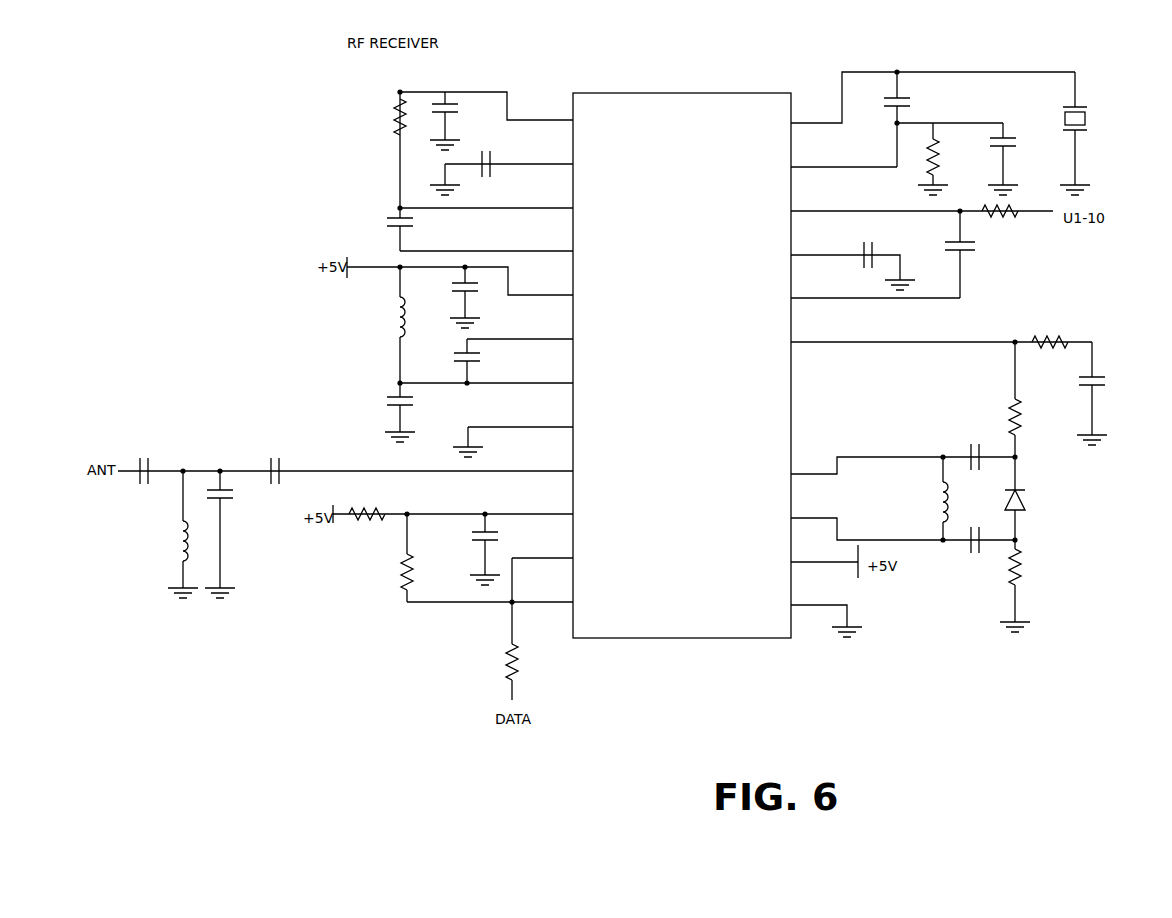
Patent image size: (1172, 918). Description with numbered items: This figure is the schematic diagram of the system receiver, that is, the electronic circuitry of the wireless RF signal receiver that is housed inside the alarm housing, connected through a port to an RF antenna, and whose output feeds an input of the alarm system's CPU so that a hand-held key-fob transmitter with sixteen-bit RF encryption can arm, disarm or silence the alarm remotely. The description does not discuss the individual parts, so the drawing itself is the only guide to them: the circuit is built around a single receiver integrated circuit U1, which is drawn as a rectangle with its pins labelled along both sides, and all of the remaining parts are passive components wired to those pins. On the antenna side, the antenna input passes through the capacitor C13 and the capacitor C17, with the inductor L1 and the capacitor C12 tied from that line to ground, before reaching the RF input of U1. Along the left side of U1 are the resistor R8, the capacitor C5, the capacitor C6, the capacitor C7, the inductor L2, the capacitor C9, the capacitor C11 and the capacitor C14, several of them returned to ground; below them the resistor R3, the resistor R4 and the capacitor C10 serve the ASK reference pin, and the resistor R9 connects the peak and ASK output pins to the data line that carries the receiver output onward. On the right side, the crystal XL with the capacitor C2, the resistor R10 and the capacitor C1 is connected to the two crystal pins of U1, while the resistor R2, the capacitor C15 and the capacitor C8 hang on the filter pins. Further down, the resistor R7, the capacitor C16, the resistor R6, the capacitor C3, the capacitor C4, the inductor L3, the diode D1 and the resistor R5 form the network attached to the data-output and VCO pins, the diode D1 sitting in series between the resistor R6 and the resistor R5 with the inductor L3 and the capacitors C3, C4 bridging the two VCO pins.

The RF receiver IC MX3400 U1 is at (683, 368).
The resistor 2.2K R8 is at (381, 125).
The capacitor 104 C5 is at (460, 121).
The capacitor 104 C6 is at (477, 170).
The capacitor 220P C7 is at (384, 229).
The inductor 33nH L2 is at (382, 325).
The capacitor 105 C9 is at (452, 297).
The capacitor 56P C11 is at (464, 361).
The capacitor 5P C14 is at (420, 412).
The capacitor 1.5P C13 is at (145, 472).
The inductor 33nH L1 is at (169, 534).
The capacitor C12 is at (230, 534).
The capacitor 8P C17 is at (268, 470).
The resistor R-SMD R3 is at (366, 514).
The resistor 100K R4 is at (388, 561).
The capacitor 105 C10 is at (468, 549).
The resistor 10K R9 is at (495, 629).
The capacitor 27P C2 is at (908, 119).
The resistor 22K R10 is at (950, 159).
The capacitor 33P C1 is at (1018, 159).
The crystal 6.772MHz XL is at (1105, 133).
The resistor 100K R2 is at (1001, 236).
The capacitor 220P C15 is at (947, 254).
The capacitor 150P C8 is at (859, 266).
The resistor 18K R7 is at (1050, 346).
The capacitor 560P C16 is at (1111, 393).
The resistor 47K R6 is at (1035, 399).
The capacitor 4P C3 is at (976, 455).
The capacitor 4P C4 is at (976, 543).
The inductor 47nF 0805 L3 is at (900, 498).
The varicap diode BB833 D1 is at (1042, 498).
The resistor 47K R5 is at (1030, 586).